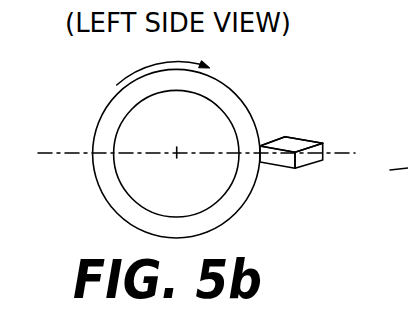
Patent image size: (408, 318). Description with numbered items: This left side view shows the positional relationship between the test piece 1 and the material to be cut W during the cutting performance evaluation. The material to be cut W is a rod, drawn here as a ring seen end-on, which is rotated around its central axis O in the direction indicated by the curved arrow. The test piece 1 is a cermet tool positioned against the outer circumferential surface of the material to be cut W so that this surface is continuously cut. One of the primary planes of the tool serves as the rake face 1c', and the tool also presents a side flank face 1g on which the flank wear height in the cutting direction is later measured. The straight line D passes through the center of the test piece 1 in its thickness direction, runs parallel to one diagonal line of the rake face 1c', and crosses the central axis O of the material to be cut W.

The material to be cut W is at (98, 118).
The central axis of material to be cut O is at (189, 141).
The straight line passing the center in thickness direction of test piece D is at (211, 152).
The test piece 1 is at (300, 191).
The side flank face 1g is at (263, 143).
The rake face 1c' is at (324, 111).